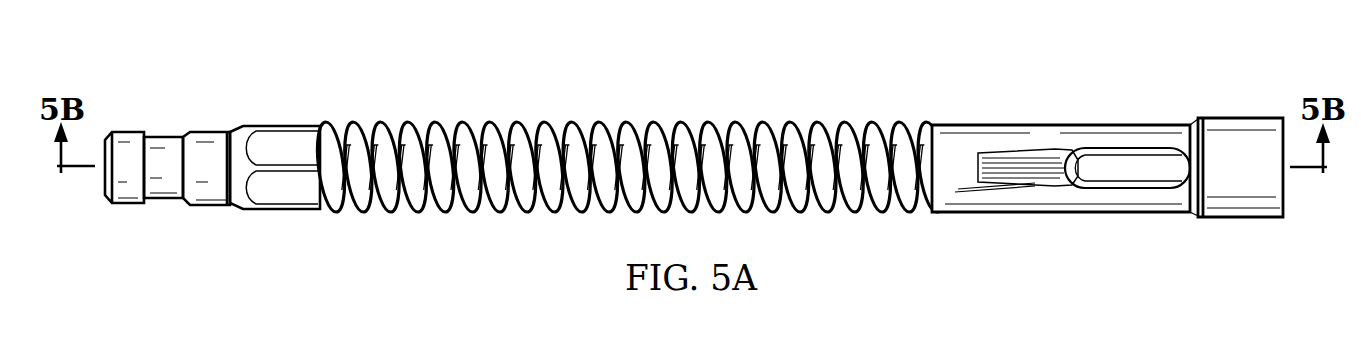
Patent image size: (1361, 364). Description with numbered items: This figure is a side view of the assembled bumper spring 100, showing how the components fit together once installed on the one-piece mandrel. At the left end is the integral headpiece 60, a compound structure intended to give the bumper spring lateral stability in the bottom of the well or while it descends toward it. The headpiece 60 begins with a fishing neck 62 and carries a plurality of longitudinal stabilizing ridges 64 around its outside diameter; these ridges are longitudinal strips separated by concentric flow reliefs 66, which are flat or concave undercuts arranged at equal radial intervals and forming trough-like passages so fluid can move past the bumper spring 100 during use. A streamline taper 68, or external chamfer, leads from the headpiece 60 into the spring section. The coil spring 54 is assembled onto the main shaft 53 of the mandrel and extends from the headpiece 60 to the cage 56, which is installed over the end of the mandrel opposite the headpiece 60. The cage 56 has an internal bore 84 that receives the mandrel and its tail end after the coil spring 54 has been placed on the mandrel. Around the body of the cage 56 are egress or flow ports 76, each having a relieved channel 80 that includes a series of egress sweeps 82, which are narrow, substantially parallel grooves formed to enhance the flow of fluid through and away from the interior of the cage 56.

The assembled bumper spring 100 is at (456, 64).
The main shaft 53 is at (903, 155).
The coil spring 54 is at (683, 124).
The cage 56 is at (965, 205).
The headpiece 60 is at (210, 140).
The fishing neck 62 is at (128, 139).
The longitudinal stabilizing ridges 64 is at (285, 168).
The concentric flow reliefs 66 is at (299, 190).
The streamline taper 68 is at (345, 153).
The flow ports 76 is at (1128, 167).
The relieved channel 80 is at (1042, 158).
The egress sweeps 82 is at (1015, 175).
The internal bore 84 is at (1294, 197).